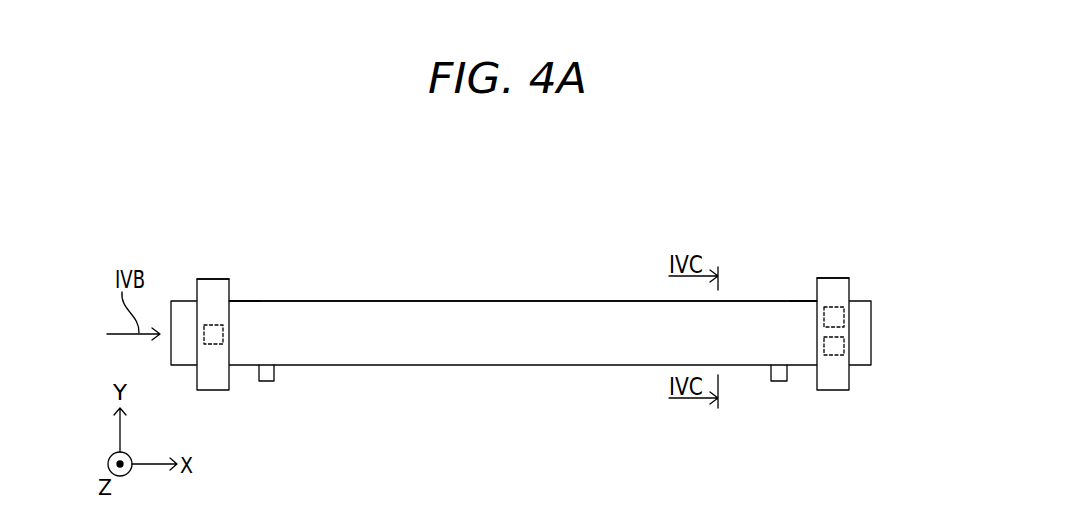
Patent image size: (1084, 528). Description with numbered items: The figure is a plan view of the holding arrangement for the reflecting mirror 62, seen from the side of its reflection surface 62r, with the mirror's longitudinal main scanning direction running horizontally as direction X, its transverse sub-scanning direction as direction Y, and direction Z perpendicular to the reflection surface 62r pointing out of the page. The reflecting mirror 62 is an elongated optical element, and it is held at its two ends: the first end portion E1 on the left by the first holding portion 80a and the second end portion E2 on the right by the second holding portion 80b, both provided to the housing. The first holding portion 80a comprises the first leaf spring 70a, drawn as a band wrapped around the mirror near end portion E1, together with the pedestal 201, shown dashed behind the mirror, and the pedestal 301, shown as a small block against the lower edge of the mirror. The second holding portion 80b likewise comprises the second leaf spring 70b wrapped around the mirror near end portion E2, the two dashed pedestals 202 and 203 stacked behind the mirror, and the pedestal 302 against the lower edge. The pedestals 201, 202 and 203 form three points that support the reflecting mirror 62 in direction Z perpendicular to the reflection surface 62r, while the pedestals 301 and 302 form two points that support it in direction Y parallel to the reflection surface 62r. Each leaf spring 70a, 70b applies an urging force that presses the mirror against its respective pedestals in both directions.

The reflecting mirror 62 is at (468, 300).
The reflection surface 62r is at (403, 328).
The first leaf spring 70a is at (212, 380).
The second leaf spring 70b is at (839, 380).
The first holding portion 80a is at (216, 256).
The second holding portion 80b is at (837, 257).
The first perpendicular support portion 201 is at (224, 333).
The second perpendicular support portion 202 is at (840, 315).
The second perpendicular support portion 203 is at (840, 343).
The first end portion E1 is at (250, 333).
The second end portion E2 is at (812, 312).
The first parallel support portion 301 is at (267, 382).
The second parallel support portion 302 is at (782, 383).